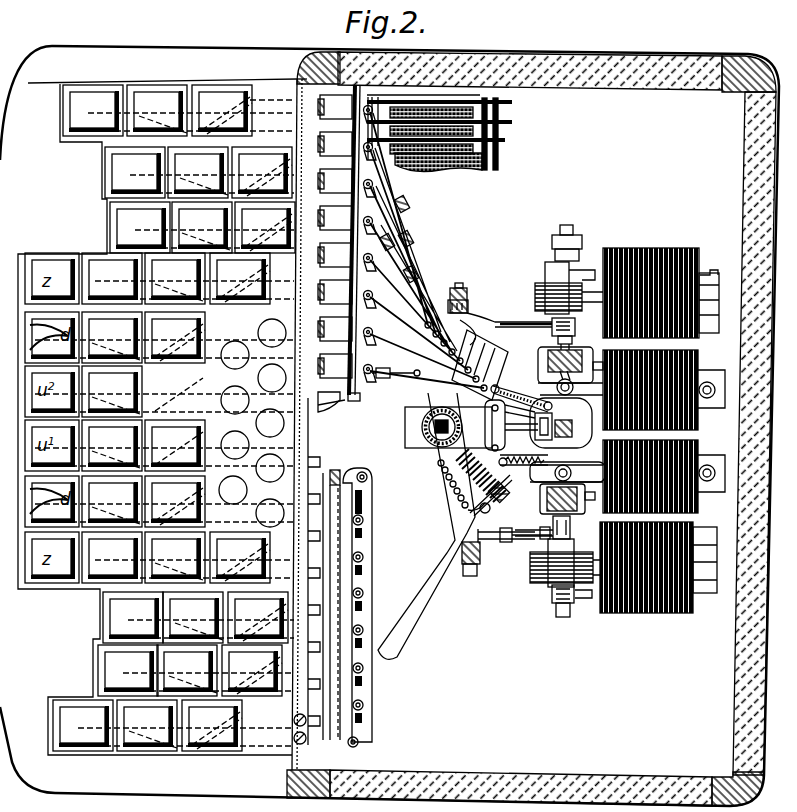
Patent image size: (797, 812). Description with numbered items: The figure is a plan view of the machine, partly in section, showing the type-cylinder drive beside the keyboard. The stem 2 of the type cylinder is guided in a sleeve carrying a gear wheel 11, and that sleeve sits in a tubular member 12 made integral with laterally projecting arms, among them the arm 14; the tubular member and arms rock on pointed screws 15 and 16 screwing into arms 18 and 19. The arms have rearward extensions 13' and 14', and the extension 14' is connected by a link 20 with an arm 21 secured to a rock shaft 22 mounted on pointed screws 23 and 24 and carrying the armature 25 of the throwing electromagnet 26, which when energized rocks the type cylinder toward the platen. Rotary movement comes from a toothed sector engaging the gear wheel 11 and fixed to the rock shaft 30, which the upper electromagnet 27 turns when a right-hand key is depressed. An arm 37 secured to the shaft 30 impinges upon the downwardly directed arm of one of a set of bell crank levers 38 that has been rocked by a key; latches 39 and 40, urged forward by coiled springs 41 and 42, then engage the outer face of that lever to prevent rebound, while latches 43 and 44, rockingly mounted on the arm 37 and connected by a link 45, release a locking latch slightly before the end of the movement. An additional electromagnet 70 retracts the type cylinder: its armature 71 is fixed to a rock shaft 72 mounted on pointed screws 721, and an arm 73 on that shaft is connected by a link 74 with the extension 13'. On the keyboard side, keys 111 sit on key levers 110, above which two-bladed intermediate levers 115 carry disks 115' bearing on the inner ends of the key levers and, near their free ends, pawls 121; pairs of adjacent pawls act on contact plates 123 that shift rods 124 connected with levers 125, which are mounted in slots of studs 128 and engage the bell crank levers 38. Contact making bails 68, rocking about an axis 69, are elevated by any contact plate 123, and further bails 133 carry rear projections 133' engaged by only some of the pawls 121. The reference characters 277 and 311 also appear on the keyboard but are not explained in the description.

The stem 2 is at (421, 428).
The gear wheel 11 is at (430, 416).
The tubular member 12 is at (430, 443).
The rearward extension 13' is at (506, 325).
The arm 14 is at (434, 526).
The rearward extension 14' is at (504, 546).
The pointed screw 15 is at (466, 288).
The pointed screw 16 is at (462, 570).
The arm 18 is at (469, 307).
The arm 19 is at (462, 550).
The link 20 is at (512, 542).
The arm 21 is at (545, 529).
The rock shaft 22 is at (571, 528).
The pointed screw 23 is at (576, 514).
The pointed screw 24 is at (563, 620).
The armature 25 is at (536, 582).
The electromagnet 26 is at (636, 612).
The upper electromagnet 27 is at (699, 497).
The rock shaft 30 is at (568, 426).
The arm 37 is at (523, 454).
The bell crank levers 38 is at (425, 375).
The latch 39 is at (528, 395).
The latch 40 is at (510, 495).
The coiled spring 41 is at (533, 409).
The coiled spring 42 is at (510, 478).
The latch 43 is at (486, 420).
The latch 44 is at (486, 444).
The link 45 is at (540, 430).
The contact making bail 68 is at (360, 398).
The axis 69 is at (325, 408).
The electromagnet 70 is at (638, 250).
The armature 71 is at (540, 283).
The rock shaft 72 is at (573, 342).
The arm 73 is at (552, 325).
The link 74 is at (524, 328).
The key levers 110 is at (270, 100).
The keys 111 is at (160, 418).
The intermediate lever 115 is at (454, 132).
The disks 115' is at (436, 133).
The pawls 121 is at (396, 366).
The contact plates 123 is at (339, 240).
The rods 124 is at (372, 188).
The levers 125 is at (420, 285).
The studs 128 is at (416, 232).
The bails 133 is at (367, 605).
The projections 133' is at (376, 607).
The keys 277 is at (262, 500).
The key 311 is at (175, 445).
The pointed screws 721 is at (574, 236).